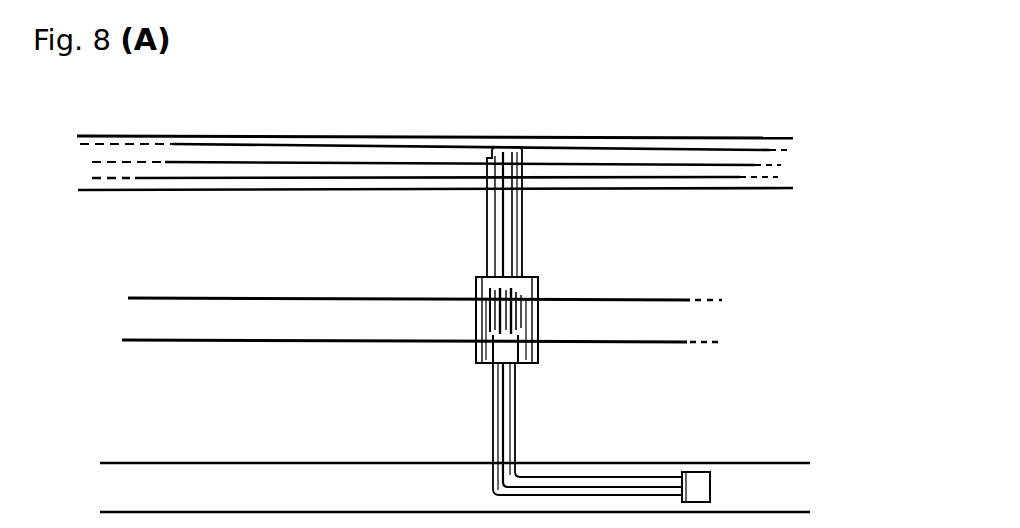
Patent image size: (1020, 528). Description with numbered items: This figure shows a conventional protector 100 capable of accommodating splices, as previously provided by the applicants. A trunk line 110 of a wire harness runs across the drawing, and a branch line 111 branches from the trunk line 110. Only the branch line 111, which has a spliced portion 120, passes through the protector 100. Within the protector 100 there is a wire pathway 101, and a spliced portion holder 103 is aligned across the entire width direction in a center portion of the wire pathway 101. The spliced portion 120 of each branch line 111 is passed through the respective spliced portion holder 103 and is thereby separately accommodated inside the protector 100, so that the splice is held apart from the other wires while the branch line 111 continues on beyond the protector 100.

The trunk line 110 is at (675, 165).
The branch line 111 is at (519, 218).
The protector 100 is at (540, 277).
The spliced portion 120 is at (478, 318).
The wire pathway 101 is at (488, 352).
The spliced portion holder 103 is at (537, 347).